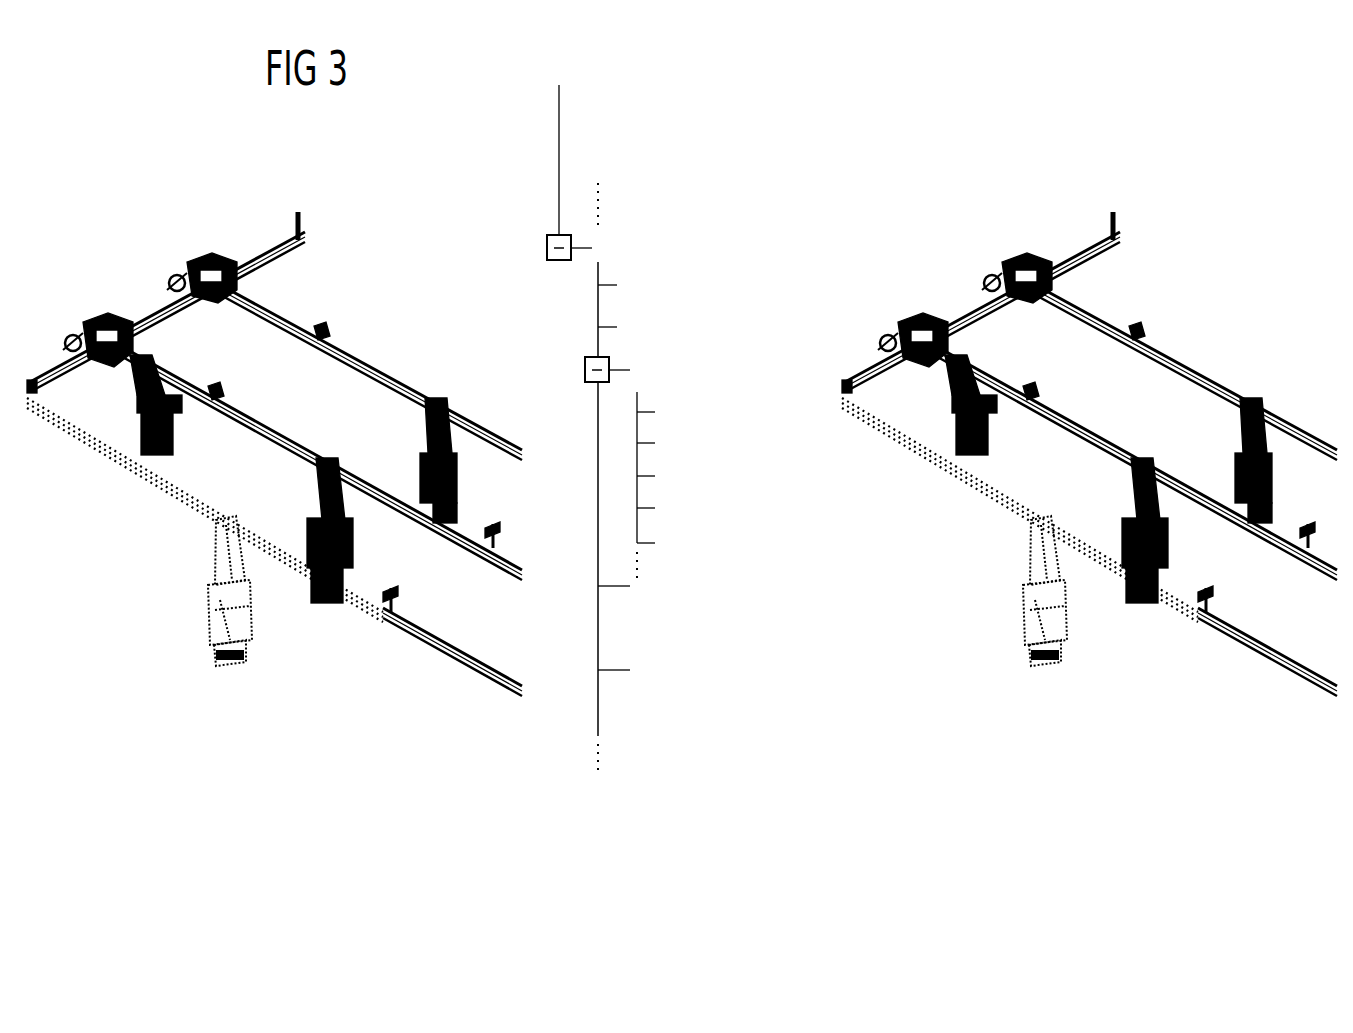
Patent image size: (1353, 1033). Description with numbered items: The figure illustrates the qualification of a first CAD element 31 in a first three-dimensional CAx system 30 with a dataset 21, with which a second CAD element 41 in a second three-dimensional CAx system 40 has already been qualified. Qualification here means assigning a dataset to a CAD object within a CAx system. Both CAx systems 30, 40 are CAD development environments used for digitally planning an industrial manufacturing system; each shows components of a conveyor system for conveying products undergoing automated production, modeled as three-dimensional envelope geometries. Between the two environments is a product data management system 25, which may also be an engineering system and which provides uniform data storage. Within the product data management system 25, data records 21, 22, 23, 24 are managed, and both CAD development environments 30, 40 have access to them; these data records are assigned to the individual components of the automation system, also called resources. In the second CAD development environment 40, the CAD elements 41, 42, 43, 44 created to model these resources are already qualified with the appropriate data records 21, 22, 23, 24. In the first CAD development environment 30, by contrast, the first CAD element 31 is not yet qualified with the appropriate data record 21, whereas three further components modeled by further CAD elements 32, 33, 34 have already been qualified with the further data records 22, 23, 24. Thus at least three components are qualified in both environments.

The dataset 21 is at (764, 479).
The data record 22 is at (767, 410).
The data record 23 is at (764, 447).
The data record 24 is at (766, 515).
The product data management system 25 is at (684, 429).
The first three-dimensional CAx system 30 is at (427, 290).
The first CAD element 31 is at (242, 616).
The further CAD element 32 is at (170, 430).
The further CAD element 33 is at (348, 546).
The further CAD element 34 is at (458, 480).
The second three-dimensional CAx system 40 is at (1089, 454).
The second CAD element 41 is at (1071, 591).
The CAD element 42 is at (996, 405).
The CAD element 43 is at (1172, 530).
The CAD element 44 is at (1282, 460).